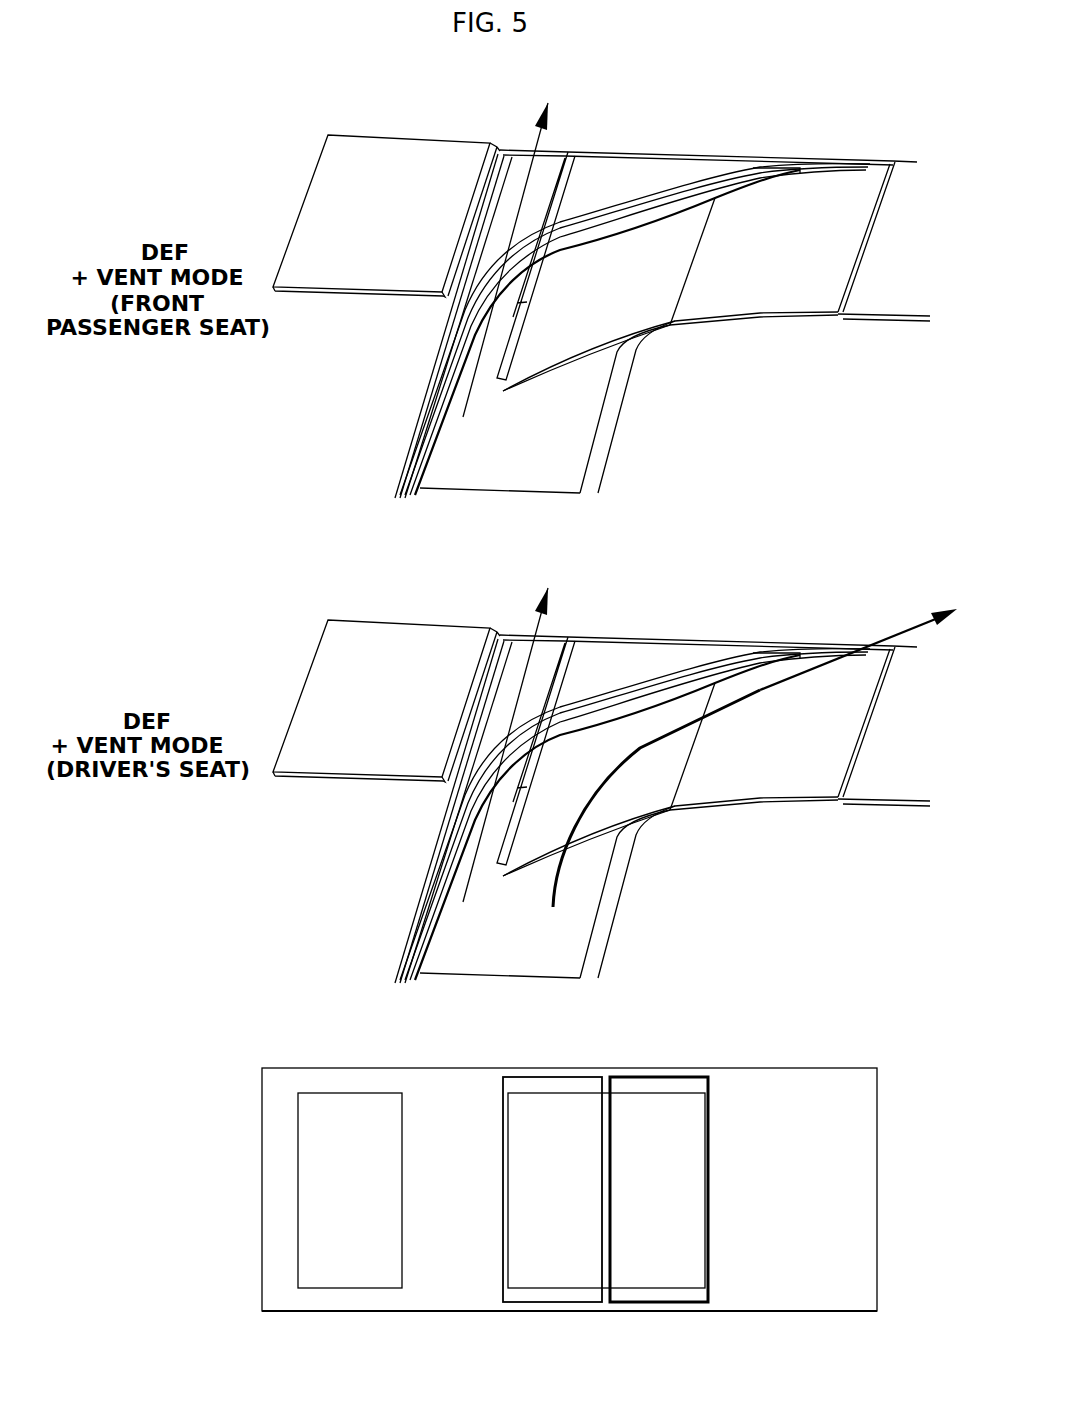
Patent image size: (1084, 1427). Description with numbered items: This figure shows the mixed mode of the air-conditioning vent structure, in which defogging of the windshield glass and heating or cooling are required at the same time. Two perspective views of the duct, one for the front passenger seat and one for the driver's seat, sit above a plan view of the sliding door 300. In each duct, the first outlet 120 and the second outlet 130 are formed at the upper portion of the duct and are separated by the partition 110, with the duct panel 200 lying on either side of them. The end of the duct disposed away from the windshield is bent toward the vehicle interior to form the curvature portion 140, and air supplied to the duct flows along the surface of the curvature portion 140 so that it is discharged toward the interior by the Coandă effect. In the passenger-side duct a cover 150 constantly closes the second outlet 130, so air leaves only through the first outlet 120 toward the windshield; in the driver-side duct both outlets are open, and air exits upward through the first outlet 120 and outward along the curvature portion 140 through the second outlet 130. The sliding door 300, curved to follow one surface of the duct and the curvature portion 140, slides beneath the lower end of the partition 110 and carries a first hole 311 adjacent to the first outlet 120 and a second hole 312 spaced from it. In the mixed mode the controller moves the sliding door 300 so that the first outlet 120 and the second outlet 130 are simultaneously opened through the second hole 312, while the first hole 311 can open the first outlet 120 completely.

The partition 110 is at (565, 170).
The first outlet 120 is at (515, 172).
The second outlet 130 is at (600, 175).
The curvature portion 140 is at (755, 758).
The cover 150 is at (650, 248).
The duct panel 200 is at (337, 203).
The sliding door 300 is at (763, 300).
The first hole 311 is at (320, 1196).
The second hole 312 is at (626, 942).